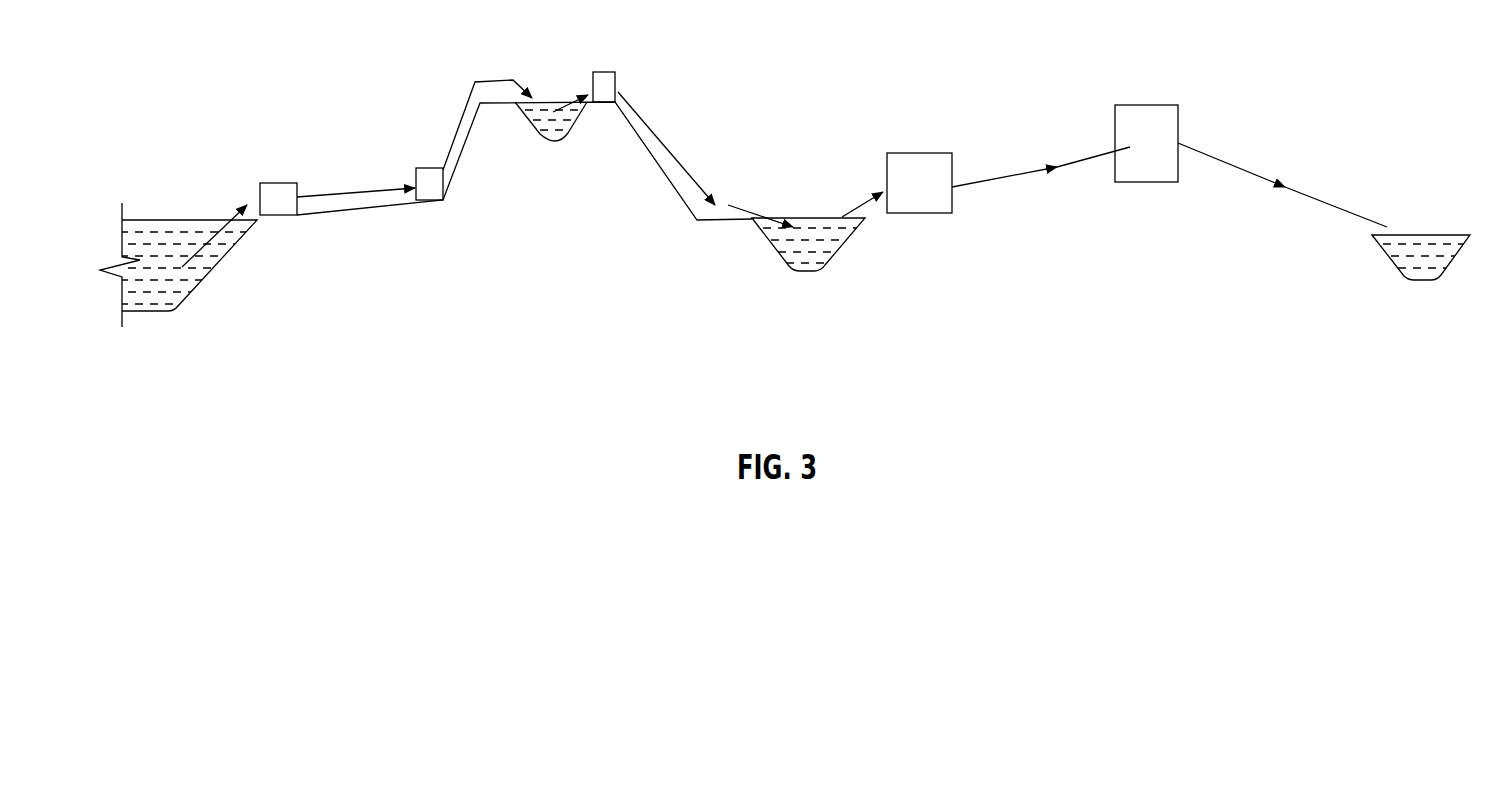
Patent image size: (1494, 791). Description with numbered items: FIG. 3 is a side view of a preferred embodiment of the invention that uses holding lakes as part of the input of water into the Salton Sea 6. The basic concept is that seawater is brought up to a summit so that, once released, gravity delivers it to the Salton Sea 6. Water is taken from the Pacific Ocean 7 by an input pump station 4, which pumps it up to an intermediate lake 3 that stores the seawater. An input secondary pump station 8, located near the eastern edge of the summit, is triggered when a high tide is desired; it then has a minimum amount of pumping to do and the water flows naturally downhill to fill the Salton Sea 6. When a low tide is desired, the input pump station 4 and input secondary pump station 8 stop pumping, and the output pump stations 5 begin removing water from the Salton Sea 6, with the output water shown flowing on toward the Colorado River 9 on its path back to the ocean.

The intermediate lake 3 is at (570, 128).
The input pump station 4 is at (277, 183).
The output pump station 5 is at (920, 153).
The Salton Sea 6 is at (855, 233).
The Pacific Ocean 7 is at (232, 253).
The input secondary pump station 8 is at (603, 72).
The Colorado River 9 is at (1375, 243).